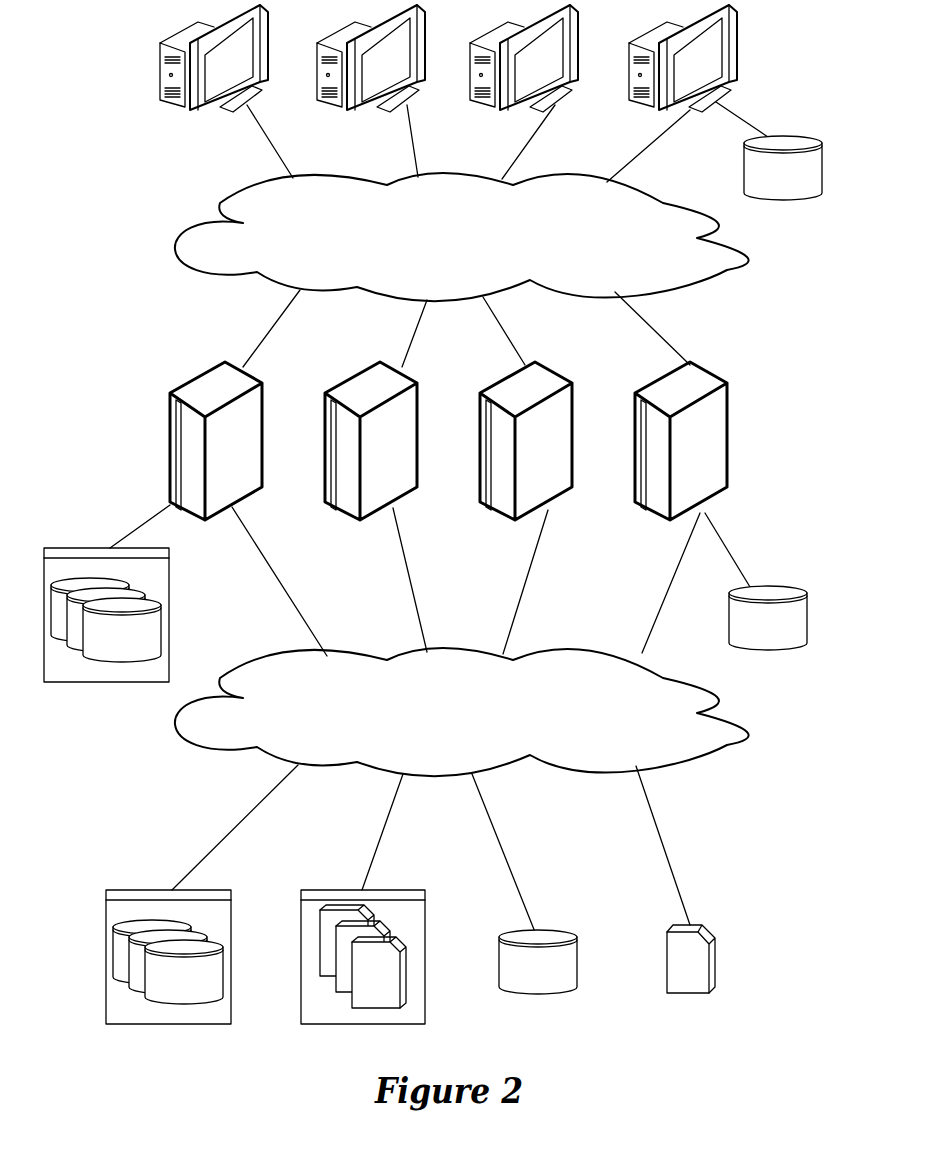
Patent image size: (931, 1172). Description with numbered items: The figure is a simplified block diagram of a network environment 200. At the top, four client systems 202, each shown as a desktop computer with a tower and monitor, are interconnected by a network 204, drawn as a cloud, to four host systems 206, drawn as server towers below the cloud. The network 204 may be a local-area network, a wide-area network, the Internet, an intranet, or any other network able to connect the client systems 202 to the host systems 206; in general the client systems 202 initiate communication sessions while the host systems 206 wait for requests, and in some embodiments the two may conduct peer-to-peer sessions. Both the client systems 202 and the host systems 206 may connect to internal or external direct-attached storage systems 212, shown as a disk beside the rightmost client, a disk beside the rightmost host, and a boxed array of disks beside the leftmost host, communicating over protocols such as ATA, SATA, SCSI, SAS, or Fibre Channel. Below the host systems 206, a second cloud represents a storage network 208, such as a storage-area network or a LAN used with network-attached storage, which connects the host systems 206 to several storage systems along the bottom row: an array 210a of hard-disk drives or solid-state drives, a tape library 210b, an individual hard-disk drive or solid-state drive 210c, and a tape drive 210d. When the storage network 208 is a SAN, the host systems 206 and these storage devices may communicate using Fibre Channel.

The network environment 200 is at (97, 168).
The client systems 202 is at (265, 30).
The network 204 is at (462, 237).
The host systems 206 is at (265, 425).
The storage network 208 is at (462, 712).
The arrays of hard-disk drives or solid-state drives 210a is at (232, 922).
The tape libraries 210b is at (427, 922).
The individual hard-disk drives or solid-state drives 210c is at (578, 953).
The tape drives 210d is at (718, 953).
The direct-attached storage systems 212 is at (790, 133).